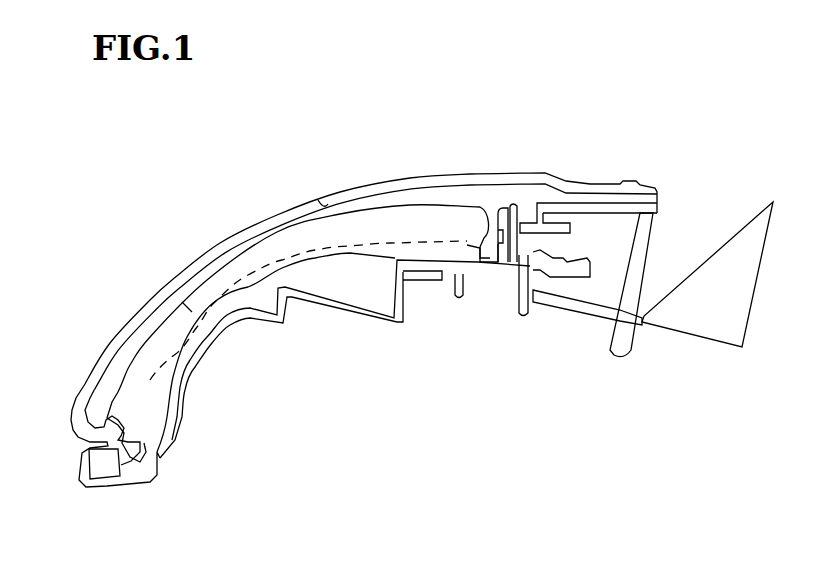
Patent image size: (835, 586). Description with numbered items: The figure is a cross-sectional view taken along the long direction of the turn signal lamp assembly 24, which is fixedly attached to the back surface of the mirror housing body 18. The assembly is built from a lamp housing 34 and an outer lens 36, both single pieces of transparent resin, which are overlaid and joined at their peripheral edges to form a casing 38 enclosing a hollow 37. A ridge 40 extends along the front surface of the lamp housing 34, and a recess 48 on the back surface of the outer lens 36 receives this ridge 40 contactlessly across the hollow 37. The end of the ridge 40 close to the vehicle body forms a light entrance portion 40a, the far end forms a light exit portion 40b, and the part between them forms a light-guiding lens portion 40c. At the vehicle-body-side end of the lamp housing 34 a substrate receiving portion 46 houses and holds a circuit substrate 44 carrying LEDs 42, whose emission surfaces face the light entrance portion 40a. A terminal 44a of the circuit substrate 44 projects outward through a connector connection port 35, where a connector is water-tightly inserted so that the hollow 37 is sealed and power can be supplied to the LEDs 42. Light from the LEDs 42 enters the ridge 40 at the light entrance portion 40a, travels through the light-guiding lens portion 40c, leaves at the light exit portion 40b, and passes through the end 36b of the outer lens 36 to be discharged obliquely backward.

The mirror housing body 18 is at (668, 320).
The turn signal lamp assembly 24 is at (669, 110).
The lamp housing 34 is at (326, 262).
The connector connection port 35 is at (607, 220).
The outer lens 36 is at (216, 250).
The end of the outer lens 36b is at (75, 444).
The hollow 37 is at (275, 229).
The casing 38 is at (375, 178).
The ridge 40 is at (163, 318).
The light entrance portion 40a is at (495, 212).
The light exit portion 40b is at (104, 427).
The light-guiding lens portion 40c is at (186, 308).
The LEDs 42 is at (491, 240).
The circuit substrate 44 is at (512, 205).
The terminal 44a is at (553, 222).
The substrate receiving portion 46 is at (490, 250).
The recess 48 is at (326, 200).